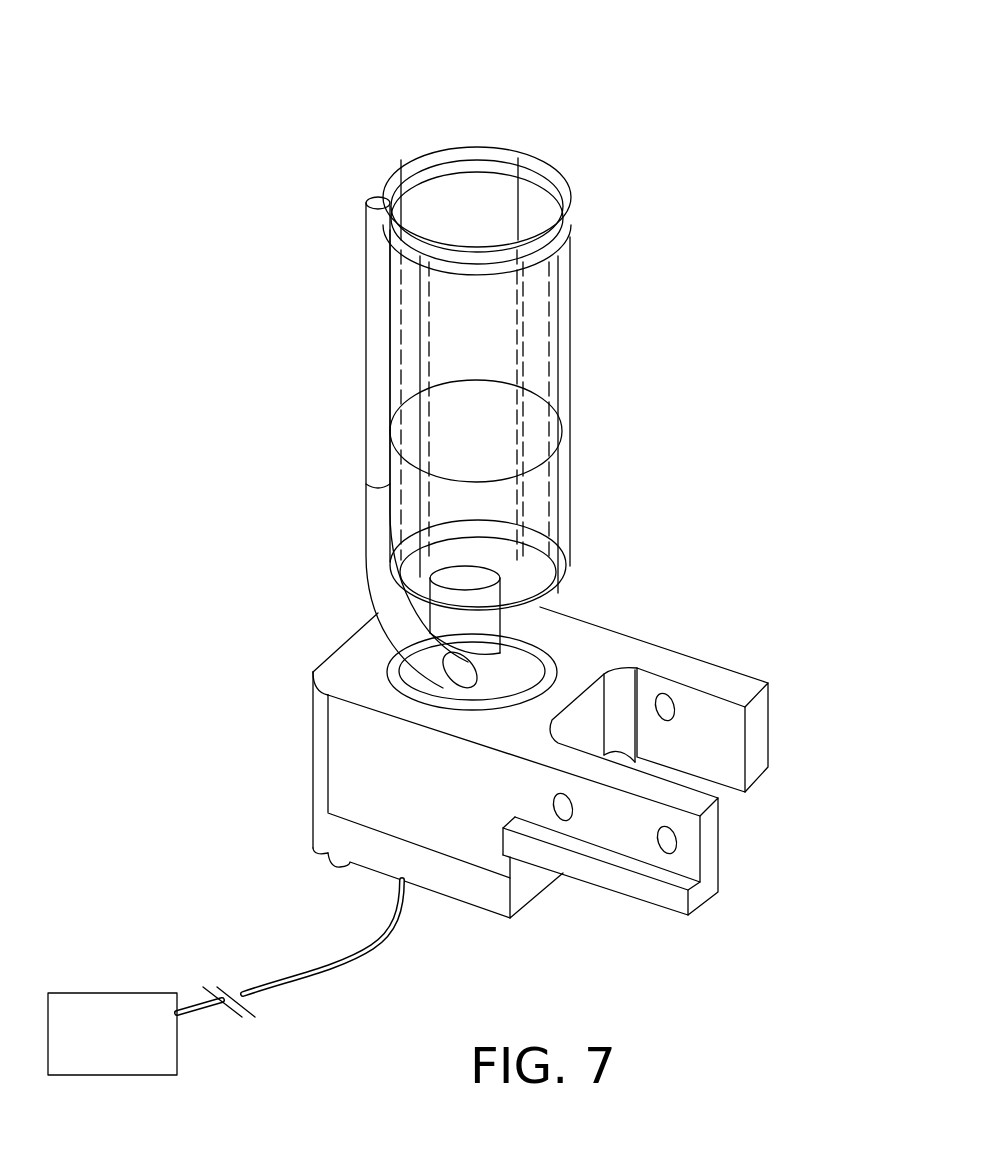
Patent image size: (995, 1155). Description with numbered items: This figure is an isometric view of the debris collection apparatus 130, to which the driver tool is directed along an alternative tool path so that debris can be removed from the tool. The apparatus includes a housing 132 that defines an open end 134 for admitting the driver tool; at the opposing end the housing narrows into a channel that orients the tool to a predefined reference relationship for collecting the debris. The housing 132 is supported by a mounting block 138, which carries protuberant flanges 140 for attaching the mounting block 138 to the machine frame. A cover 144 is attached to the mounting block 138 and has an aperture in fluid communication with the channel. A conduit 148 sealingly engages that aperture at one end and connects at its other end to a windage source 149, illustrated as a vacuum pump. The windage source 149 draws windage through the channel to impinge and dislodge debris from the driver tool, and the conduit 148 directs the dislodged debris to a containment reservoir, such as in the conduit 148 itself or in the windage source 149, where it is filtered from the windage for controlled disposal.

The debris collection apparatus 130 is at (303, 112).
The housing 132 is at (572, 332).
The open end 134 is at (467, 190).
The mounting block 138 is at (313, 737).
The protuberant flanges 140 is at (768, 743).
The cover 144 is at (527, 902).
The conduit 148 is at (300, 967).
The windage source 149 is at (95, 992).